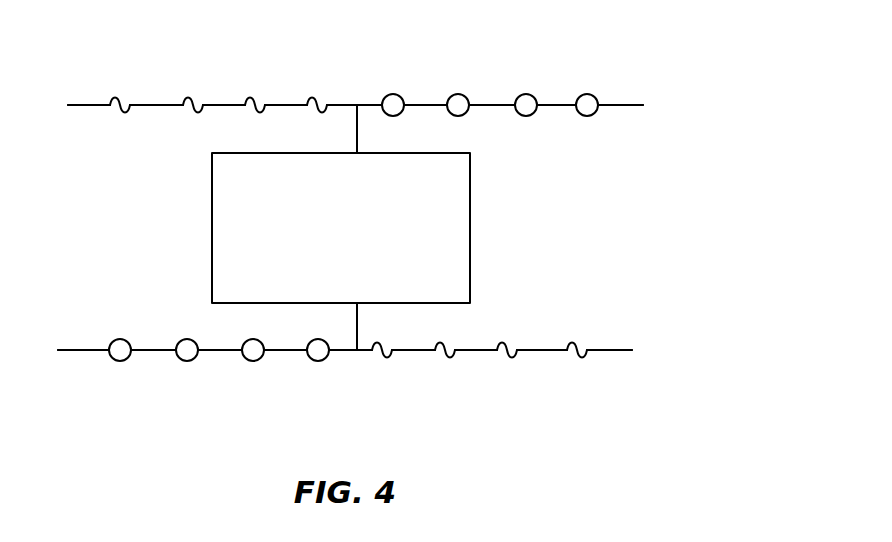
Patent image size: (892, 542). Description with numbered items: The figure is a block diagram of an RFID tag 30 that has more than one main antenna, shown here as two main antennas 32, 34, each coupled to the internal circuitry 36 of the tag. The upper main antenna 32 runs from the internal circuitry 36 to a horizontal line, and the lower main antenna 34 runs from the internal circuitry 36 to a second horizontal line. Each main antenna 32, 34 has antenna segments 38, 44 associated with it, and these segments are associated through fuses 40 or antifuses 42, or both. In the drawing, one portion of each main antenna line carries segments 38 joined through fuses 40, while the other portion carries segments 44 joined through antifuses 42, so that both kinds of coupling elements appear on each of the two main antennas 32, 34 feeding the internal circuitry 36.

The RFID tag 30 is at (407, 230).
The main antenna 32 is at (357, 128).
The main antenna 34 is at (357, 318).
The internal circuitry 36 is at (460, 226).
The antenna segments 38 is at (288, 107).
The fuses 40 is at (118, 97).
The antifuses 42 is at (393, 94).
The antenna segments 44 is at (428, 107).